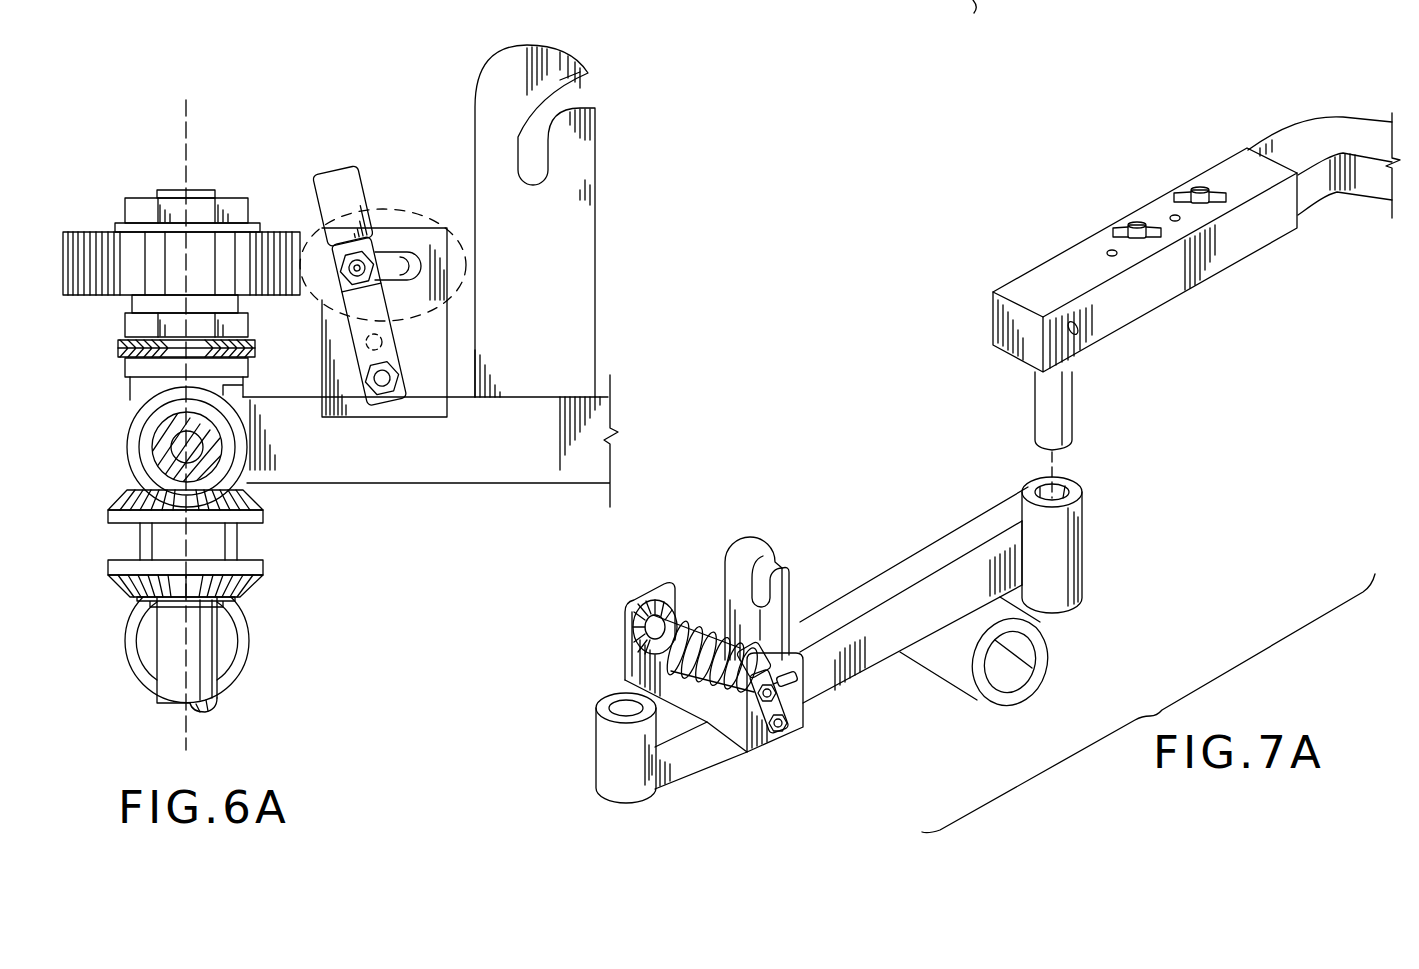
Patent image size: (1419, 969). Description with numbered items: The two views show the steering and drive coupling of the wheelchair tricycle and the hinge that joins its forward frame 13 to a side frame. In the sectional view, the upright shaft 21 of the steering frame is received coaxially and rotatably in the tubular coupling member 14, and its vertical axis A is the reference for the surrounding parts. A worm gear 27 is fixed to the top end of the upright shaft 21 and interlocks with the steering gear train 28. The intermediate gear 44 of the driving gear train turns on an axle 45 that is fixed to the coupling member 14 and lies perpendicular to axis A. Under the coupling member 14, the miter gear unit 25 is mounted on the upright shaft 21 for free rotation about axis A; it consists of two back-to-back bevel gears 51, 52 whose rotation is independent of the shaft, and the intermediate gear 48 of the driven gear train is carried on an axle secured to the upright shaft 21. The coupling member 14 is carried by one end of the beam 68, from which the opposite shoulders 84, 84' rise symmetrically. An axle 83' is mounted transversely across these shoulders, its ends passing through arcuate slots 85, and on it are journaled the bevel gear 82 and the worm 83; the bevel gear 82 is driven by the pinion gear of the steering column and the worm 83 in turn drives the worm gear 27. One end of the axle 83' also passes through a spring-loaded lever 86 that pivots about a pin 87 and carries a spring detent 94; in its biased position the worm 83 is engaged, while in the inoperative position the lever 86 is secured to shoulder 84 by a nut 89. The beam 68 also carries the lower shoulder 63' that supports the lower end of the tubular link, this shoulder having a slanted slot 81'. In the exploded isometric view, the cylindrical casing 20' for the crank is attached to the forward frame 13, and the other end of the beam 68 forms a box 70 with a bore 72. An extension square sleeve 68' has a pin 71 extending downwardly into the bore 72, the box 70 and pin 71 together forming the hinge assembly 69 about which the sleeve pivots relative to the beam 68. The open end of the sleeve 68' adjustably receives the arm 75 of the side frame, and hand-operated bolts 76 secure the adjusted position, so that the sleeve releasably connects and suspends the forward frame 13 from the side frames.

In FIG. 6A, the vertical axis A is at (181, 121).
In FIG. 7A, the forward frame 13 is at (712, 766).
In FIG. 6A, the coupling member 14 is at (140, 397).
In FIG. 7A, the coupling member 14 is at (605, 746).
In FIG. 7A, the cylindrical casing 20' is at (1028, 656).
In FIG. 6A, the upright shaft 21 is at (200, 187).
In FIG. 6A, the miter gear unit 25 is at (239, 540).
In FIG. 6A, the worm gear 27 is at (248, 250).
In FIG. 6A, the steering gear train 28 is at (113, 221).
In FIG. 6A, the intermediate gear 44 is at (127, 443).
In FIG. 6A, the axle 45 is at (185, 453).
In FIG. 6A, the intermediate gear 48 is at (242, 628).
In FIG. 6A, the bevel gear 51 is at (263, 503).
In FIG. 6A, the bevel gear 52 is at (260, 583).
In FIG. 6A, the lower shoulder 63' is at (611, 221).
In FIG. 7A, the lower shoulder 63' is at (757, 558).
In FIG. 6A, the beam 68 is at (430, 467).
In FIG. 7A, the beam 68 is at (914, 561).
In FIG. 7A, the extension square sleeve 68' is at (1141, 255).
In FIG. 7A, the hinge assembly 69 is at (1097, 489).
In FIG. 7A, the box 70 is at (1077, 547).
In FIG. 7A, the pin 71 is at (1065, 393).
In FIG. 7A, the bore 72 is at (1077, 483).
In FIG. 7A, the arm 75 is at (1305, 142).
In FIG. 7A, the hand-operated bolts 76 is at (1190, 190).
In FIG. 6A, the hook tip 81' is at (623, 105).
In FIG. 7A, the bevel gear 82 is at (660, 600).
In FIG. 6A, the worm 83 is at (369, 249).
In FIG. 7A, the worm 83 is at (707, 601).
In FIG. 6A, the axle 83' is at (315, 302).
In FIG. 7A, the axle 83' is at (823, 720).
In FIG. 6A, the shoulder 84 is at (383, 248).
In FIG. 7A, the shoulder 84' is at (684, 638).
In FIG. 6A, the arcuate slots 85 is at (395, 263).
In FIG. 7A, the arcuate slots 85 is at (797, 682).
In FIG. 6A, the spring-loaded lever 86 is at (337, 188).
In FIG. 7A, the spring-loaded lever 86 is at (782, 628).
In FIG. 6A, the pin 87 is at (390, 390).
In FIG. 7A, the pin 87 is at (788, 727).
In FIG. 6A, the nut 89 is at (360, 292).
In FIG. 6A, the spring detent 94 is at (374, 342).